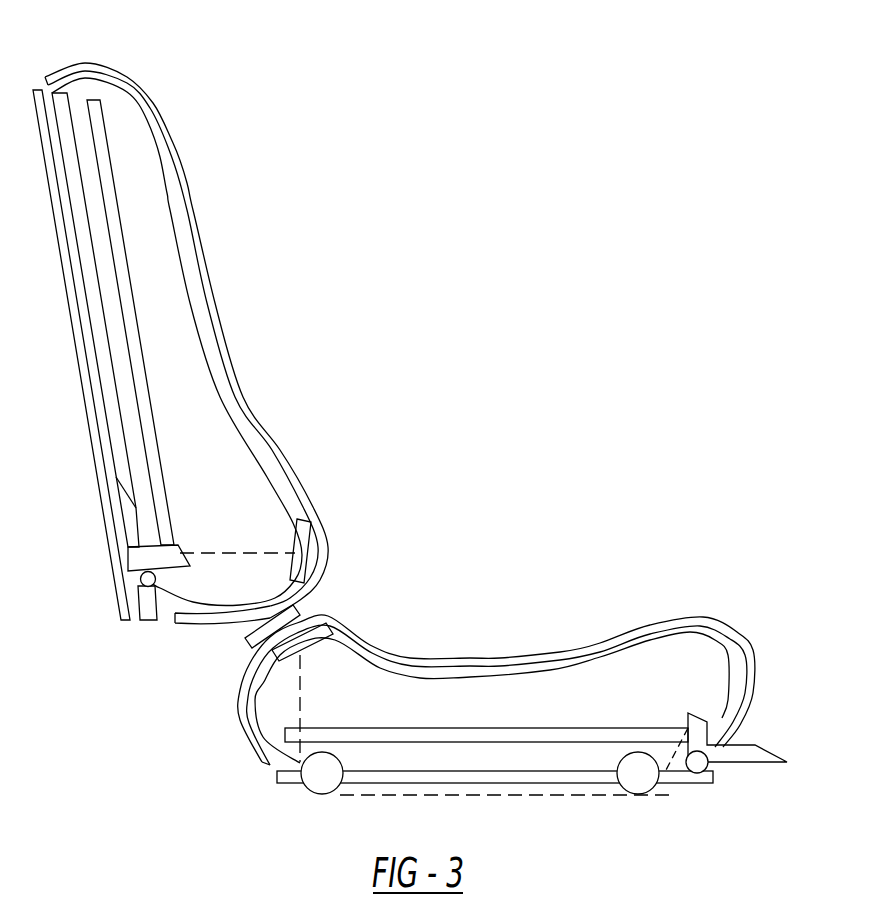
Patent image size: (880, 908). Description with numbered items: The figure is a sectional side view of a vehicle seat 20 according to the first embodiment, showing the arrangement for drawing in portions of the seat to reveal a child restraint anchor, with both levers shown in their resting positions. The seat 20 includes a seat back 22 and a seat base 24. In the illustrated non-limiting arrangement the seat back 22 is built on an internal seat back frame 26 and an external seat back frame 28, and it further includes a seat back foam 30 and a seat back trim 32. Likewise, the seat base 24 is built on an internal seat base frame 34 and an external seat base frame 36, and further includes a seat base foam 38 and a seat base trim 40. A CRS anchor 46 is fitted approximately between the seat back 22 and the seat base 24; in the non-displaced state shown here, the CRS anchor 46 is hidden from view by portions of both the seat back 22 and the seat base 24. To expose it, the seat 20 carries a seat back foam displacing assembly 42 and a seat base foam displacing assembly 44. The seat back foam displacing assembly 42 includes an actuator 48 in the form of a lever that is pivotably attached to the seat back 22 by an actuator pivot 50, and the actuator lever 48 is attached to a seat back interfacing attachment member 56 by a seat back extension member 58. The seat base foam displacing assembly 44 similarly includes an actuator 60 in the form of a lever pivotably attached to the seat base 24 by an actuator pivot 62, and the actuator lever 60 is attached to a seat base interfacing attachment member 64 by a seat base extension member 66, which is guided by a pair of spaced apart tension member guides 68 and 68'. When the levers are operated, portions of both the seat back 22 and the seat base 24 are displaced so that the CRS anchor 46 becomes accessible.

The seat 20 is at (236, 82).
The seat back 22 is at (140, 210).
The seat base 24 is at (670, 618).
The internal seat back frame 26 is at (117, 243).
The external seat back frame 28 is at (87, 393).
The seat back foam 30 is at (152, 343).
The seat back trim 32 is at (245, 393).
The internal seat base frame 34 is at (410, 735).
The external seat base frame 36 is at (568, 775).
The seat base foam 38 is at (607, 690).
The seat base trim 40 is at (740, 633).
The seat back foam displacing assembly 42 is at (128, 547).
The seat base foam displacing assembly 44 is at (740, 767).
The CRS anchor 46 is at (247, 640).
The actuator lever 48 is at (127, 510).
The actuator pivot 50 is at (145, 580).
The seat back interfacing attachment member 56 is at (303, 540).
The seat back extension member 58 is at (227, 553).
The actuator lever 60 is at (753, 753).
The actuator pivot 62 is at (698, 783).
The seat base interfacing attachment member 64 is at (322, 633).
The seat base extension member 66 is at (482, 795).
The tension member guide 68 is at (298, 818).
The tension member guide 68' is at (653, 816).